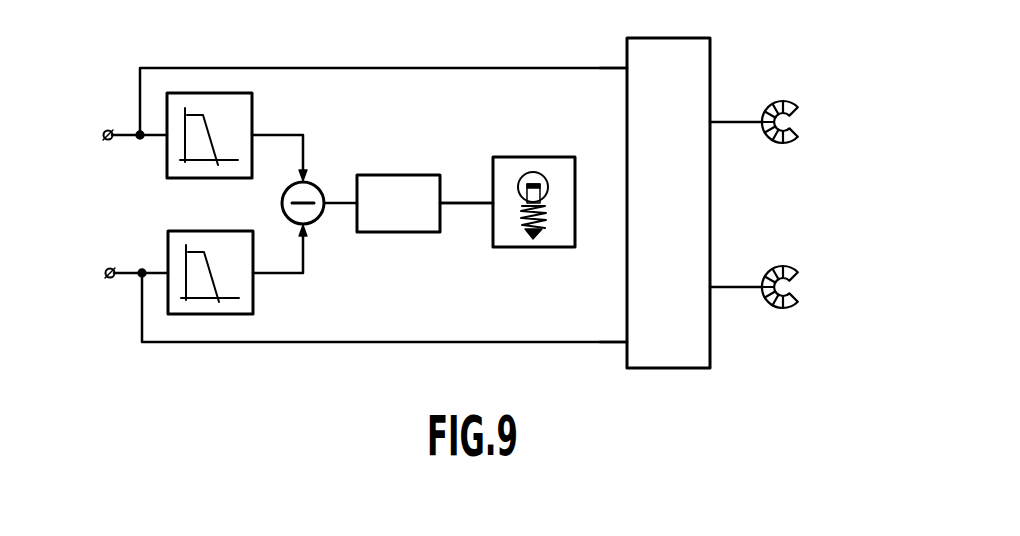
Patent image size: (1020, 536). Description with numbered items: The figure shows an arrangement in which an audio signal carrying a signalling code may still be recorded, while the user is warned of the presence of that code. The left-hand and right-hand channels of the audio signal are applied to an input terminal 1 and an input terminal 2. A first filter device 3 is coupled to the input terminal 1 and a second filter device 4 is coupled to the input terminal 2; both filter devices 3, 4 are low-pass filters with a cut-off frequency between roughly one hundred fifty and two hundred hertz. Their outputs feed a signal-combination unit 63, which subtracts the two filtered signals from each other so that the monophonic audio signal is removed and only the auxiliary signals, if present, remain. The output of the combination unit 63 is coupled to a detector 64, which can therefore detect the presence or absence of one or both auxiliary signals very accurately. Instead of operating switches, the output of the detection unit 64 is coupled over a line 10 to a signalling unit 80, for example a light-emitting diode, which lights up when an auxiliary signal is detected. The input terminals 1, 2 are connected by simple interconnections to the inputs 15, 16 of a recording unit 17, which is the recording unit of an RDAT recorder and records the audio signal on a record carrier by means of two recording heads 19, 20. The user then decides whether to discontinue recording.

The input terminal 1 is at (108, 130).
The input terminal 2 is at (112, 278).
The first filter device 3 is at (252, 112).
The second filter device 4 is at (253, 290).
The line 10 is at (466, 201).
The input of recording unit 15 is at (626, 66).
The input of recording unit 16 is at (625, 344).
The recording unit 17 is at (677, 38).
The recording head 19 is at (781, 100).
The recording head 20 is at (783, 310).
The signal-combination unit 63 is at (318, 186).
The detector 64 is at (410, 175).
The signalling unit 80 is at (547, 157).